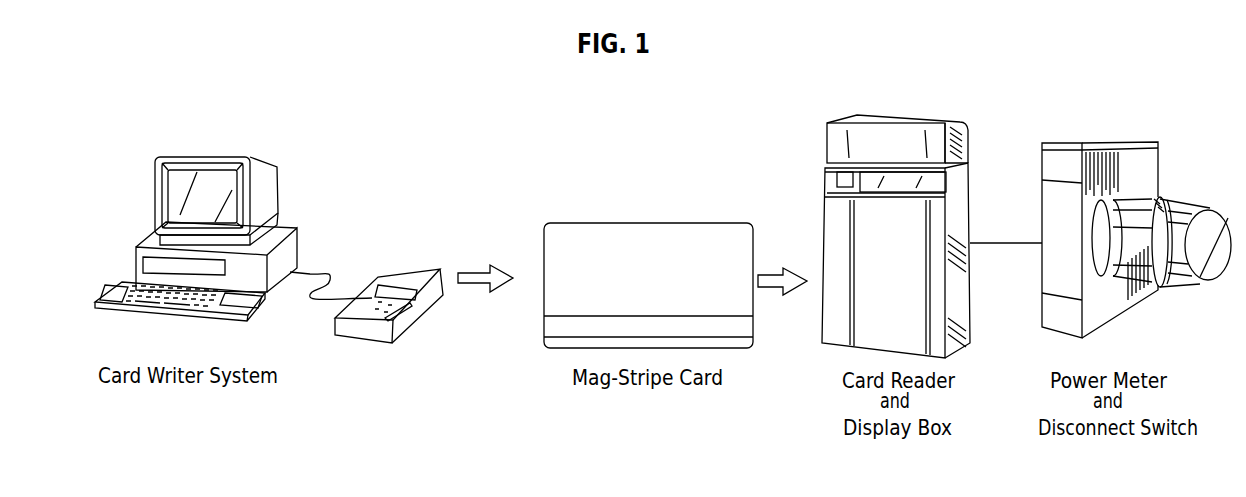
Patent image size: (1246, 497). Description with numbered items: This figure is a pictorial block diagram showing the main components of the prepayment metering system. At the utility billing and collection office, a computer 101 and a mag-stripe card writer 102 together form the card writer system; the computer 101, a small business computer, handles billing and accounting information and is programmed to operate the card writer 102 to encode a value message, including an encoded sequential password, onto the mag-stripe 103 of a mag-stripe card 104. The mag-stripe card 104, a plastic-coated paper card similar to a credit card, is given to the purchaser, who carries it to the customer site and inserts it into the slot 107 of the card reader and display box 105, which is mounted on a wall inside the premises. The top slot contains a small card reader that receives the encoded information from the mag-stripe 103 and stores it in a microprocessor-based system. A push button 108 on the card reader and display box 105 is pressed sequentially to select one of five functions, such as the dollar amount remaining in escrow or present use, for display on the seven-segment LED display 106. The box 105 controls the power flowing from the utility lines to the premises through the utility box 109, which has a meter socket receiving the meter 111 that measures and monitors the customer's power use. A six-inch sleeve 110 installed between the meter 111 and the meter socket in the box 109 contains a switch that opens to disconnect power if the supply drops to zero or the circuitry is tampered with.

The computer 101 is at (268, 168).
The mag-stripe card writer 102 is at (400, 268).
The mag-stripe 103 is at (552, 328).
The mag-stripe card 104 is at (617, 294).
The card reader and display box 105 is at (907, 236).
The 7-segment LED display 106 is at (937, 185).
The slot 107 is at (962, 145).
The push button 108 is at (840, 178).
The utility box 109 is at (1060, 155).
The sleeve 110 is at (1194, 176).
The meter 111 is at (1210, 282).